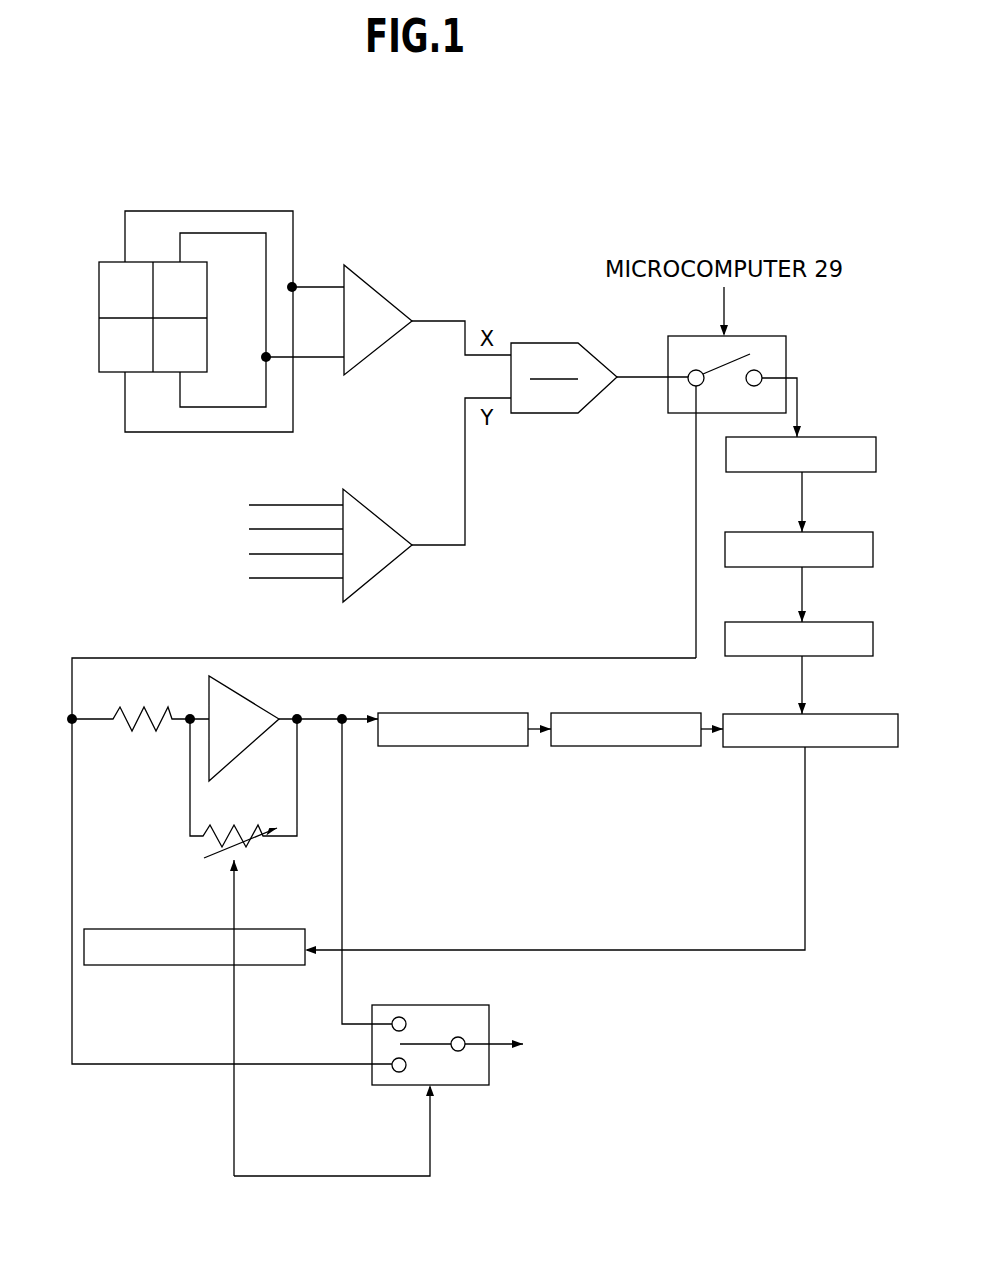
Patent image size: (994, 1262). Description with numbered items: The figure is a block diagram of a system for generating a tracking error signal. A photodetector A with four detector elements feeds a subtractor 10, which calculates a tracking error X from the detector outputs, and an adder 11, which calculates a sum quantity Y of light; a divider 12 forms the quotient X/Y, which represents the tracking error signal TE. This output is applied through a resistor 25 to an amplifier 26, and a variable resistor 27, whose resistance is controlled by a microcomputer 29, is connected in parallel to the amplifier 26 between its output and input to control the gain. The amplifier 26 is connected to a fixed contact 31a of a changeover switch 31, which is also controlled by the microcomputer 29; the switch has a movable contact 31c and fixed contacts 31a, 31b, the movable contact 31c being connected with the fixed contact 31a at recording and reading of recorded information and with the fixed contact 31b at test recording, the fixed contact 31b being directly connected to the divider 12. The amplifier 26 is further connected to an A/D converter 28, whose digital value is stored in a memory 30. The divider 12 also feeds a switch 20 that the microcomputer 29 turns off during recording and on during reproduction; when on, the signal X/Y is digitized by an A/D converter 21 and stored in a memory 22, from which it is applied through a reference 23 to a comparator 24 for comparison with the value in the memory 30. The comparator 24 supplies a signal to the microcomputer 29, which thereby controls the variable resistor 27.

The photodetector A is at (135, 202).
The subtractor 10 is at (385, 297).
The adder 11 is at (390, 523).
The divider 12 is at (560, 341).
The switch 20 is at (761, 337).
The A/D converter 21 is at (857, 437).
The memory 22 is at (858, 531).
The reference 23 is at (852, 621).
The comparator 24 is at (857, 713).
The resistor 25 is at (138, 713).
The amplifier 26 is at (258, 708).
The variable resistor 27 is at (250, 847).
The A/D converter 28 is at (428, 712).
The microcomputer 29 is at (288, 967).
The memory 30 is at (638, 712).
The changeover switch 31 is at (467, 1005).
The fixed contact 31a is at (395, 1017).
The fixed contact 31b is at (400, 1075).
The movable contact 31c is at (438, 1043).